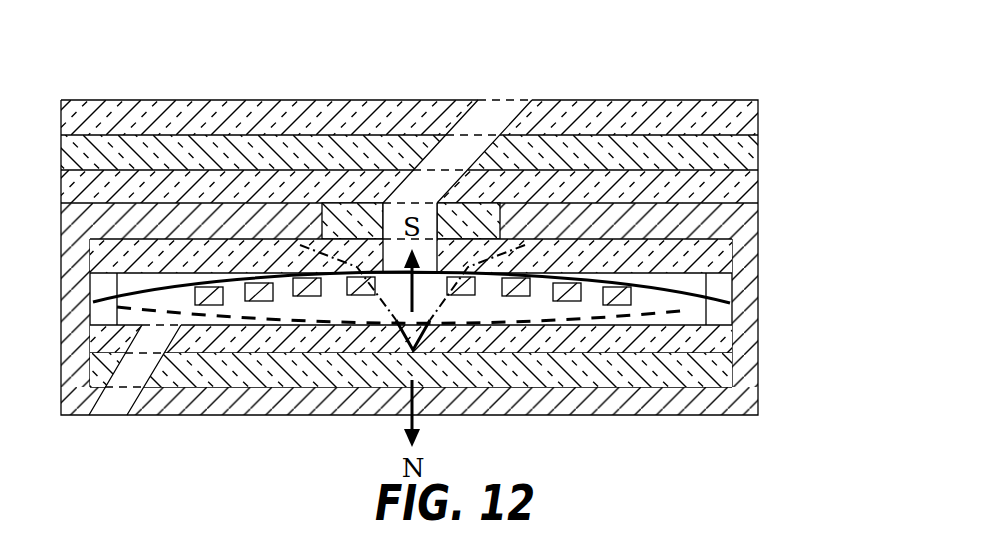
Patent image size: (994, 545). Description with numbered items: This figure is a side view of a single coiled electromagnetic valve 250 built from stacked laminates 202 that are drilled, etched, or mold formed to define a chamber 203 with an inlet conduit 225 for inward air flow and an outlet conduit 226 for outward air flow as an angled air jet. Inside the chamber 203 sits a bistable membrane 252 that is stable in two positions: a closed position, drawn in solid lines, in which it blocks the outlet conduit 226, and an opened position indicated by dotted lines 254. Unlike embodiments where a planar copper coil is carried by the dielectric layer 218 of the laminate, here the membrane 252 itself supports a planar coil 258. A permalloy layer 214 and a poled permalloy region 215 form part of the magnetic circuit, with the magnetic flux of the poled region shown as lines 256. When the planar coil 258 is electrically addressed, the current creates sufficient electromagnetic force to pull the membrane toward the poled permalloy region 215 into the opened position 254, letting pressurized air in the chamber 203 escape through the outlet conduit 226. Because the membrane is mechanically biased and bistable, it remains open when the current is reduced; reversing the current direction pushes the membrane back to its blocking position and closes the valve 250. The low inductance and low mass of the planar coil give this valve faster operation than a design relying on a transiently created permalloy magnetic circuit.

The laminates 202 is at (207, 188).
The chamber 203 is at (688, 285).
The permalloy layer 214 is at (750, 378).
The poled permalloy region 215 is at (423, 365).
The dielectric layer 218 is at (745, 413).
The inlet conduit 225 is at (111, 407).
The outlet conduit 226 is at (503, 114).
The single coiled electromagnetic valve 250 is at (721, 52).
The bistable membrane 252 is at (708, 295).
The opened position 254 is at (687, 310).
The magnetic flux lines 256 is at (378, 303).
The planar coil 258 is at (567, 302).